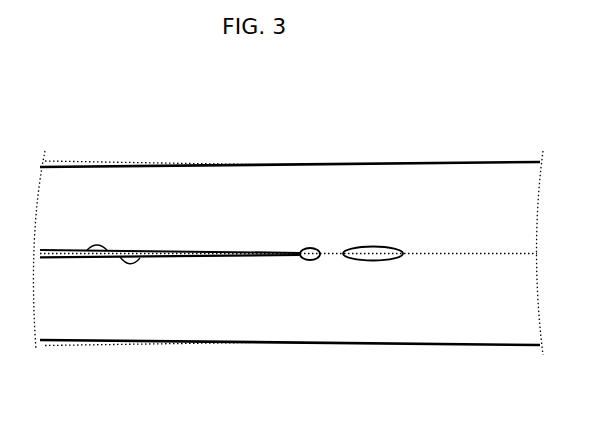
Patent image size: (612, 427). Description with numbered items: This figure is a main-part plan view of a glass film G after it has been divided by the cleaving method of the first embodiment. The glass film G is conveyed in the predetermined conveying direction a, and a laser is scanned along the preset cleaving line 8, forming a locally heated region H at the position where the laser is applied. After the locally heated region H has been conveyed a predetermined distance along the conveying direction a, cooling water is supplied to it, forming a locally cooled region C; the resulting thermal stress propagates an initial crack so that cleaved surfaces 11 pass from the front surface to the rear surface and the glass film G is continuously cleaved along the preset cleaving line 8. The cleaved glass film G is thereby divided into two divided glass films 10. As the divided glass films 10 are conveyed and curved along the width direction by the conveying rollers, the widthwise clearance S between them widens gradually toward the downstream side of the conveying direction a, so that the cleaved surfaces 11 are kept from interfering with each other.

The divided glass film 10 is at (80, 183).
The cleaved surface 11 is at (140, 250).
The widthwise clearance S is at (62, 290).
The preset cleaving line 8 is at (494, 257).
The locally cooled region C is at (311, 247).
The locally heated region H is at (368, 245).
The glass film G is at (444, 205).
The conveying direction a is at (250, 144).